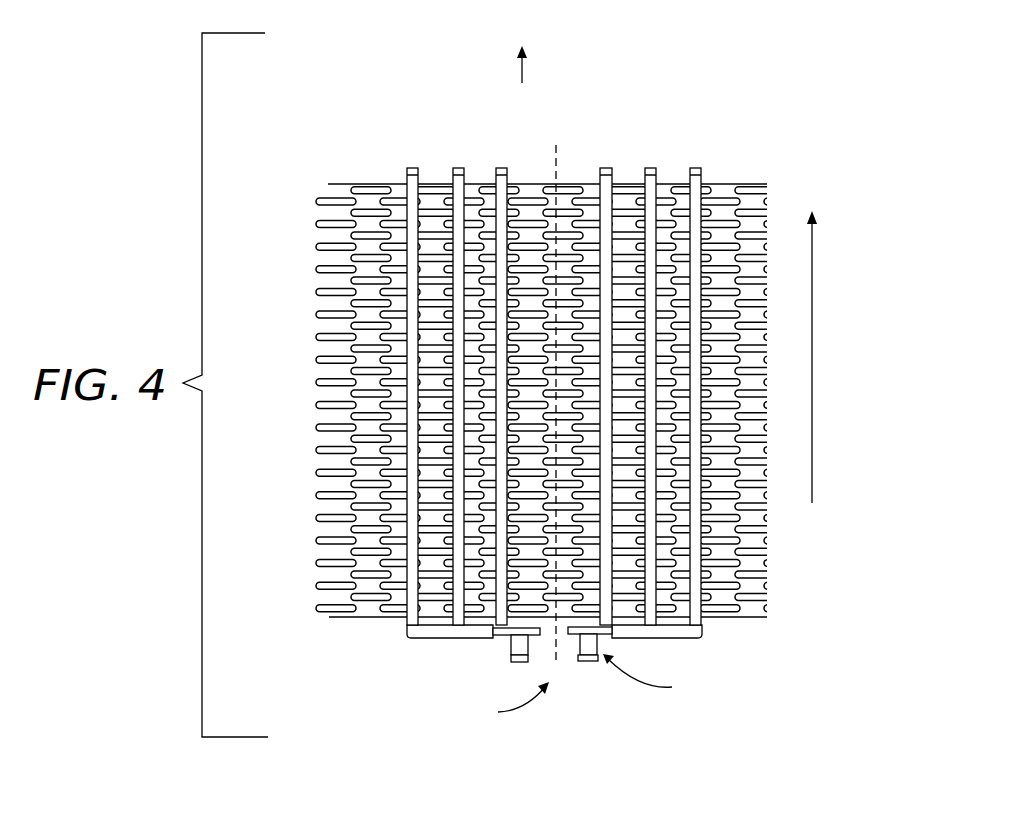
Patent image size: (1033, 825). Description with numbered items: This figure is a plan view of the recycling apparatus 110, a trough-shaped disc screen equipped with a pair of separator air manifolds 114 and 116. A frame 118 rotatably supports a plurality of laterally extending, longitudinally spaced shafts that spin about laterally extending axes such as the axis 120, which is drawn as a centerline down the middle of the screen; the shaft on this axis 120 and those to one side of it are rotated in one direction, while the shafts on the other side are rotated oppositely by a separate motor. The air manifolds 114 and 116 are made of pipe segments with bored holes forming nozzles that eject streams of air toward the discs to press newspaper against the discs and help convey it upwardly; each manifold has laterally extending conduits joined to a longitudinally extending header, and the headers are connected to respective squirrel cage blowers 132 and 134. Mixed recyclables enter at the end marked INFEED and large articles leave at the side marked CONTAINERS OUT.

The recycling apparatus 110 is at (286, 318).
The separator air manifold 114 is at (463, 641).
The separator air manifold 116 is at (673, 643).
The frame 118 is at (715, 184).
The axis 120 is at (557, 163).
The squirrel cage blower 132 is at (510, 658).
The squirrel cage blower 134 is at (585, 661).